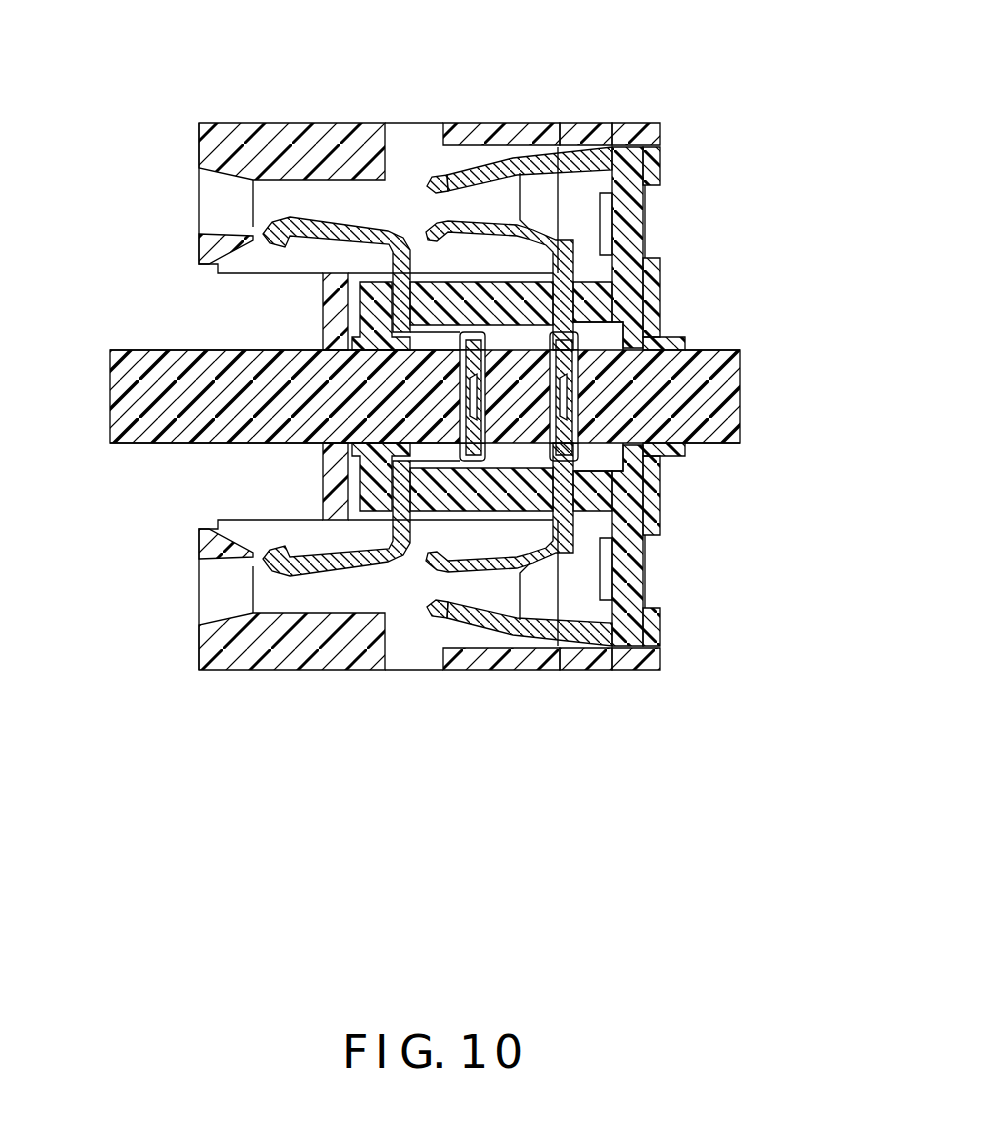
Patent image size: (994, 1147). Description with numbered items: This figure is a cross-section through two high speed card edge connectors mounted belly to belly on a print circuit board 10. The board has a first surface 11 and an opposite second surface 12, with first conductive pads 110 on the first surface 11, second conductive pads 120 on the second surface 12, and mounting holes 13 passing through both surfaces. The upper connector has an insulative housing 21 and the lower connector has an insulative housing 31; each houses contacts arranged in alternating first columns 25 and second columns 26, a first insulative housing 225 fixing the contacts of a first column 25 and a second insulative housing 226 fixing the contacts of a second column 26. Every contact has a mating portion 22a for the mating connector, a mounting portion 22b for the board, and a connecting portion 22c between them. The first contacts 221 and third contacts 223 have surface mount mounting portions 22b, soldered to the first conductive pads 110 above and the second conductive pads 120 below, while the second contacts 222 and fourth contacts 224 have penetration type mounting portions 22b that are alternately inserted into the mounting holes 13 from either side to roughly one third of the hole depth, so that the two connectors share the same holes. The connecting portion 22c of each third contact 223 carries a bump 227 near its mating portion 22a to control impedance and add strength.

The print circuit board 10 is at (140, 405).
The first surface 11 is at (155, 350).
The second surface 12 is at (160, 445).
The mounting holes 13 is at (467, 349).
The first conductive pads 110 is at (245, 350).
The second conductive pads 120 is at (340, 441).
The insulative housing 21 is at (622, 135).
The mating portion 22a is at (438, 182).
The mounting portion 22b is at (670, 343).
The connecting portion 22c is at (642, 192).
The first contacts 221 is at (272, 232).
The second contacts 222 is at (420, 592).
The third contacts 223 is at (520, 166).
The fourth contacts 224 is at (462, 222).
The first insulative housing 225 is at (592, 490).
The second insulative housing 226 is at (605, 300).
The bump 227 is at (585, 147).
The first columns 25 is at (648, 568).
The second columns 26 is at (650, 228).
The insulative housing 31 is at (610, 656).